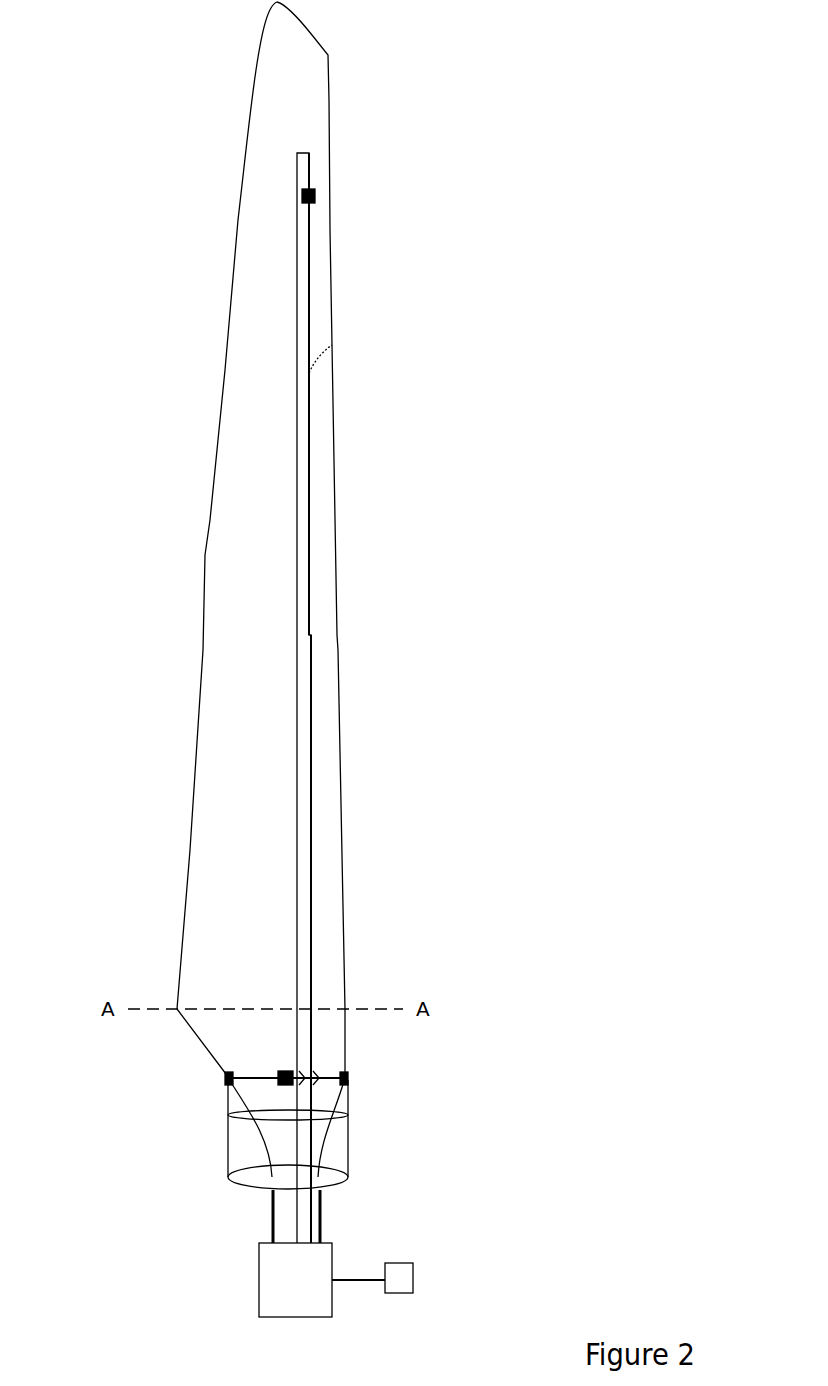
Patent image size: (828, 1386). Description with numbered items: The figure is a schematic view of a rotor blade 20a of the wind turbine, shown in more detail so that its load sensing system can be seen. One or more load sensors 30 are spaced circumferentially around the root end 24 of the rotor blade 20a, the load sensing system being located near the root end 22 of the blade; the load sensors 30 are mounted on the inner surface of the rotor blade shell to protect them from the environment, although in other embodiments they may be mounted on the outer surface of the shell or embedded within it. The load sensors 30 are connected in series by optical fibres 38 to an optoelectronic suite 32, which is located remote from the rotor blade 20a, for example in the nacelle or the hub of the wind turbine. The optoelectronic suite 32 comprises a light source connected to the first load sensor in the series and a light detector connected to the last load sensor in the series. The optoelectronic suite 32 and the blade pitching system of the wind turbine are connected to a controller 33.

The rotor blade 20a is at (205, 555).
The root end 24 is at (457, 142).
The root end 22 is at (112, 1087).
The load sensors 30 is at (225, 1078).
The optical fibres 38 is at (271, 1208).
The optoelectronic suite 32 is at (259, 1265).
The controller 33 is at (413, 1289).